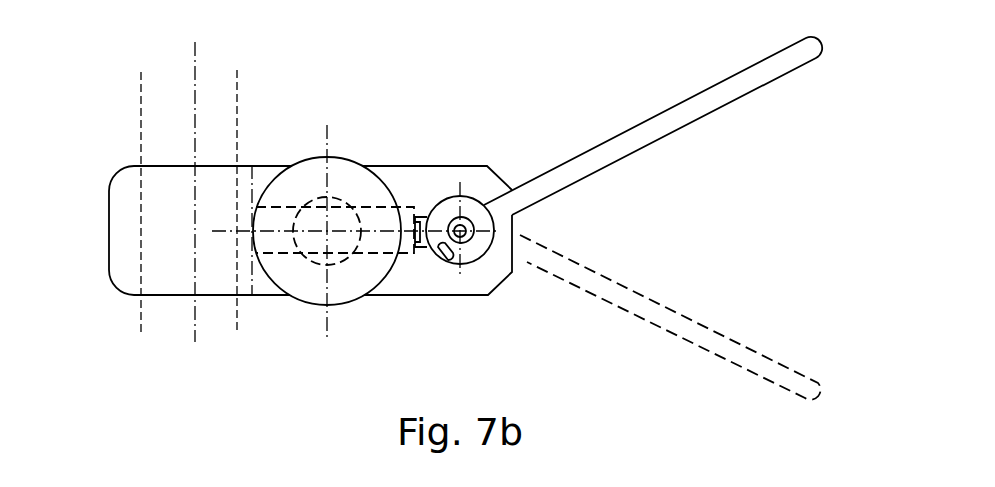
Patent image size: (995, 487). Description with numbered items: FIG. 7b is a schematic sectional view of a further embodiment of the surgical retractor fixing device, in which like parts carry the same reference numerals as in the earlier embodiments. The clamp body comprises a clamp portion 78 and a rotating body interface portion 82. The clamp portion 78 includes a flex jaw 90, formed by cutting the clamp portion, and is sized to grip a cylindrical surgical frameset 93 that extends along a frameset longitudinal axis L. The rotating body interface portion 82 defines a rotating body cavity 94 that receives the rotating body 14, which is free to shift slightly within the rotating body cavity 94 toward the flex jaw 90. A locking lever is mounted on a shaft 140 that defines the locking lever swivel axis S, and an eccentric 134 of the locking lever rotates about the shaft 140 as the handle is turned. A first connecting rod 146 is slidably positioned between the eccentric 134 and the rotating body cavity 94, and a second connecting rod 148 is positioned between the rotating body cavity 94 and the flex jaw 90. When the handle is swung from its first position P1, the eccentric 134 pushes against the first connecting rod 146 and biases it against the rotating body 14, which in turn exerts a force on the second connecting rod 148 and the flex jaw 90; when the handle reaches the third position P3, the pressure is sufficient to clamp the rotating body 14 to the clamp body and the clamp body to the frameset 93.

The rotating body 14 is at (348, 278).
The clamp portion 78 is at (168, 297).
The flex jaw 90 is at (247, 297).
The rotating body interface portion 82 is at (263, 320).
The surgical frameset 93 is at (163, 90).
The frameset longitudinal axis L is at (195, 122).
The rotating body cavity 94 is at (380, 180).
The second connecting rod 148 is at (278, 245).
The first connecting rod 146 is at (420, 217).
The locking lever swivel axis S is at (465, 197).
The eccentric 134 is at (448, 258).
The shaft 140 is at (480, 250).
The first position P1 is at (669, 125).
The third position P3 is at (687, 326).